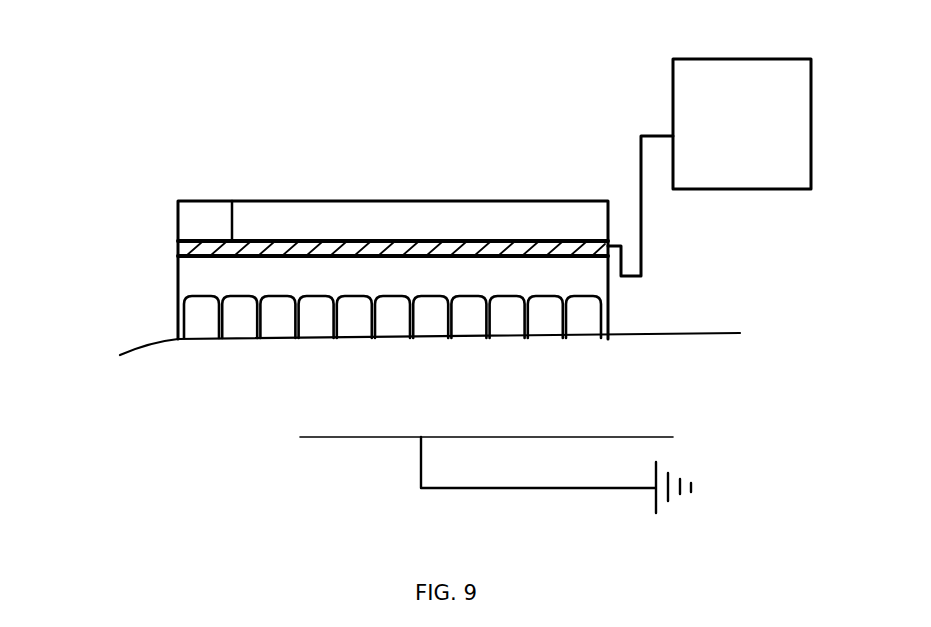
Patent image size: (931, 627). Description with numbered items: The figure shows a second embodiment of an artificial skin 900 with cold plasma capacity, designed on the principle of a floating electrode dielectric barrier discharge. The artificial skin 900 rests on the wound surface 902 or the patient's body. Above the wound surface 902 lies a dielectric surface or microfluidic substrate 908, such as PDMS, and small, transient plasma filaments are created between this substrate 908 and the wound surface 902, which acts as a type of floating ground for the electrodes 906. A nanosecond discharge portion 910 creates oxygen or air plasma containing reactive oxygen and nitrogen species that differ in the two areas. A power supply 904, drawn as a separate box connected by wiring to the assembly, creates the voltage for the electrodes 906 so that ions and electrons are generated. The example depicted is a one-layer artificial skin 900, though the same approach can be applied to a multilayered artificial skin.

The artificial skin 900 is at (168, 142).
The wound surface 902 is at (727, 382).
The power supply 904 is at (814, 87).
The floating ground electrodes 906 is at (380, 250).
The microfluidic substrate 908 is at (210, 220).
The nanosecond discharge portion 910 is at (335, 322).